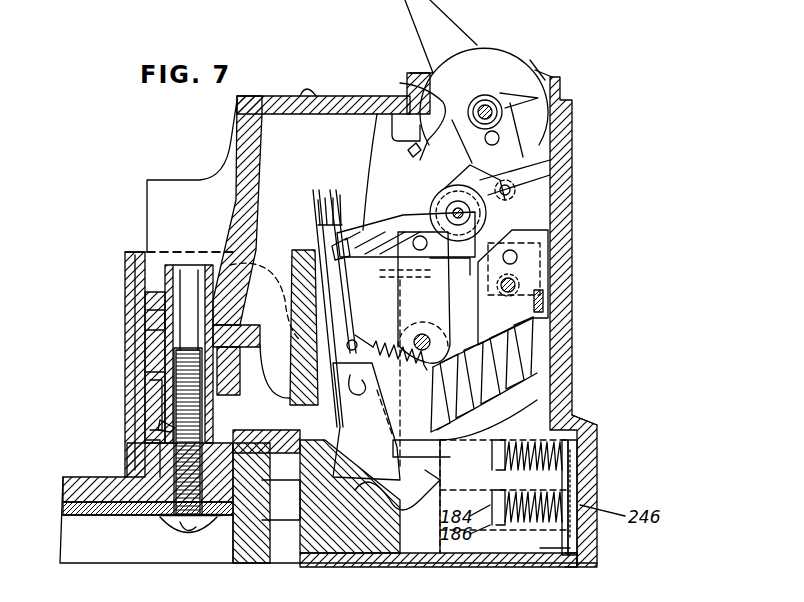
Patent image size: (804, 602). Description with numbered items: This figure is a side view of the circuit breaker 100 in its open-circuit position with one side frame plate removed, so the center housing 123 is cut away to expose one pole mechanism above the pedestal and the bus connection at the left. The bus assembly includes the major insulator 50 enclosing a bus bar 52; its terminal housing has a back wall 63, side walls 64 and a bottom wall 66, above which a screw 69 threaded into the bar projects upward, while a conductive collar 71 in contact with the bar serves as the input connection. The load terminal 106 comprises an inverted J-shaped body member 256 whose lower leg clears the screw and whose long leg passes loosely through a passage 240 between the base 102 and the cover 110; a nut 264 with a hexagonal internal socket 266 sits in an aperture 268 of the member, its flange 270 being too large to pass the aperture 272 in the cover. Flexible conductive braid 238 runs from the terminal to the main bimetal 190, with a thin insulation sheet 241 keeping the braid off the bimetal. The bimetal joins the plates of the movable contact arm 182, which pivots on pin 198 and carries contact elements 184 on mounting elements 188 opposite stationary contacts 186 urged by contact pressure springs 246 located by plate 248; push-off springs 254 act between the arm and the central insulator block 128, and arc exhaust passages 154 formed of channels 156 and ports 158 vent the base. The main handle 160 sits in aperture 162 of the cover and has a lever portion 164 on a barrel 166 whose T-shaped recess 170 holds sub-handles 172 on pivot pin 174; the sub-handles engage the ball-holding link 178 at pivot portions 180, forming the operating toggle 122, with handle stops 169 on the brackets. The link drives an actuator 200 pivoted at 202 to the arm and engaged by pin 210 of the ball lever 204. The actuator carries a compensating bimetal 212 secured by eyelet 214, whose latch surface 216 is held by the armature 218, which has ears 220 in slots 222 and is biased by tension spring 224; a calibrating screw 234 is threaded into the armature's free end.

The major insulator 50 is at (130, 447).
The bus bar 52 is at (85, 466).
The back wall 63 is at (125, 258).
The side wall 64 is at (150, 250).
The bottom wall 66 is at (140, 440).
The screw 69 is at (175, 530).
The conductive collar 71 is at (150, 517).
The circuit breaker housing 100 is at (583, 111).
The base 102 is at (580, 498).
The load terminal 106 is at (138, 375).
The cover 110 is at (575, 265).
The operating toggle 122 is at (358, 170).
The center housing 123 is at (296, 97).
The central insulator block 128 is at (540, 255).
The arc exhaust passage 154 is at (580, 545).
The channel 156 is at (522, 560).
The port 158 is at (580, 565).
The main handle 160 is at (509, 44).
The aperture 162 is at (537, 72).
The manual lever portion 164 is at (405, 15).
The barrel 166 is at (520, 70).
The handle stop 169 is at (395, 138).
The T-shaped recess 170 is at (420, 98).
The sub-handle 172 is at (555, 153).
The handle pivot pin 174 is at (478, 105).
The ball-holding link 178 is at (498, 216).
The pivot portion 180 is at (555, 170).
The movable contact arm 182 is at (442, 330).
The movable contact element 184 is at (490, 450).
The stationary contact 186 is at (490, 465).
The contact mounting element 188 is at (377, 485).
The main bimetal 190 is at (296, 320).
The pivot pin 198 is at (432, 340).
The actuator 200 is at (480, 270).
The pivot 202 is at (418, 252).
The ball lever 204 is at (408, 150).
The pin 210 is at (460, 210).
The compensating bimetal 212 is at (446, 192).
The eyelet 214 is at (460, 262).
The latch surface 216 is at (332, 250).
The armature 218 is at (355, 304).
The ear 220 is at (378, 392).
The slot 222 is at (380, 375).
The tension spring 224 is at (390, 338).
The calibrating screw 234 is at (315, 205).
The flexible conductive braid 238 is at (290, 405).
The passage 240 is at (160, 315).
The insulation sheet 241 is at (330, 400).
The contact pressure spring 246 is at (585, 420).
The plate 248 is at (580, 472).
The push-off spring 254 is at (492, 393).
The J-shaped body member 256 is at (152, 392).
The nut 264 is at (170, 358).
The hexagonal internal socket 266 is at (180, 270).
The aperture 268 is at (176, 352).
The flange 270 is at (160, 425).
The aperture 272 is at (165, 300).